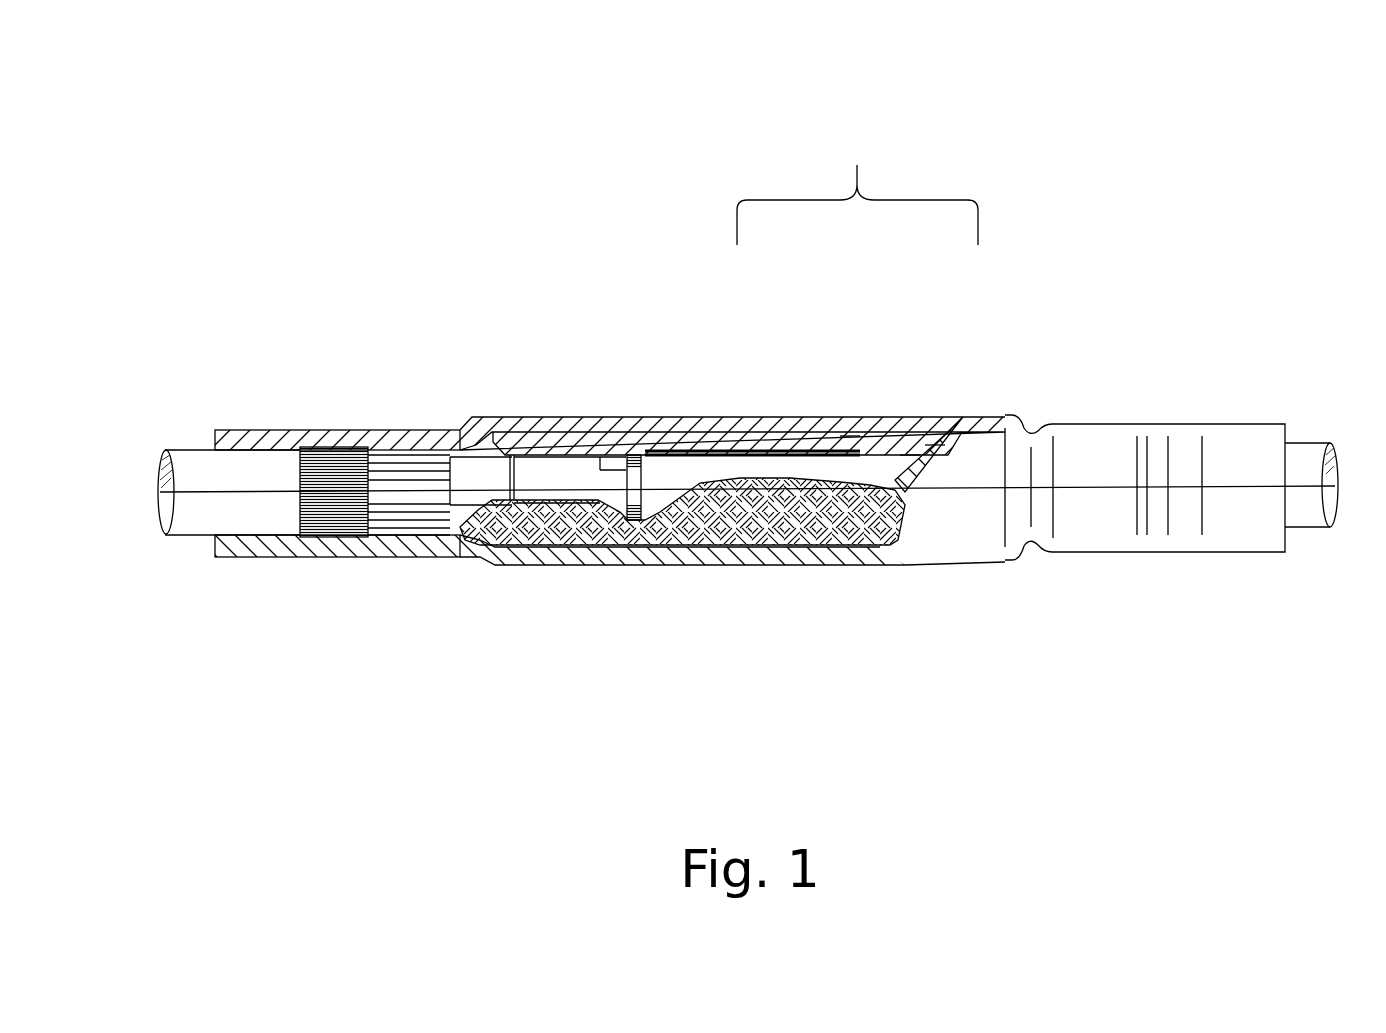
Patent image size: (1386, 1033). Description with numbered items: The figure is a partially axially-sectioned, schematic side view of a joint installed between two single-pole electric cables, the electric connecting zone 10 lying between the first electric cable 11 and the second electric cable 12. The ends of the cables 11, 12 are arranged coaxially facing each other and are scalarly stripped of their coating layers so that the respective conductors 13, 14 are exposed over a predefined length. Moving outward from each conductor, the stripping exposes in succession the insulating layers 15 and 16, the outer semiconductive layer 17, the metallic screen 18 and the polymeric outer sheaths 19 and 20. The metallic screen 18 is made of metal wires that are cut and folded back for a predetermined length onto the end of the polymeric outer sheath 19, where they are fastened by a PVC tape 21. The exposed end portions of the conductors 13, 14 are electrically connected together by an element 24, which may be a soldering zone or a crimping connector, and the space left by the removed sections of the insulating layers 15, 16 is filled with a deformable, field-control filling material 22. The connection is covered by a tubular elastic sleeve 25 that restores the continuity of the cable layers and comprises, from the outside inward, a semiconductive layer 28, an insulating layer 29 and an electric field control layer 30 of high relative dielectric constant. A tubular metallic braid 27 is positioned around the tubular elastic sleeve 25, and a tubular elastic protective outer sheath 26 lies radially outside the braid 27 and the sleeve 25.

The electric connecting zone 10 is at (690, 230).
The electric cable 11 is at (177, 578).
The electric cable 12 is at (1294, 576).
The conductor 13 is at (620, 468).
The conductor 14 is at (882, 548).
The insulating layer 15 is at (542, 470).
The insulating layer 16 is at (917, 530).
The outer semiconductive layer 17 is at (468, 482).
The metallic screen 18 is at (403, 473).
The polymeric outer sheath 19 is at (205, 475).
The polymeric outer sheath 20 is at (1309, 463).
The PVC tape 21 is at (337, 482).
The filling material 22 is at (727, 447).
The element 24 is at (683, 465).
The tubular elastic sleeve 25 is at (857, 281).
The tubular elastic protective outer sheath 26 is at (555, 548).
The tubular metallic braid 27 is at (747, 545).
The semiconductive layer 28 is at (933, 445).
The insulating layer 29 is at (850, 440).
The electric field control layer 30 is at (910, 455).